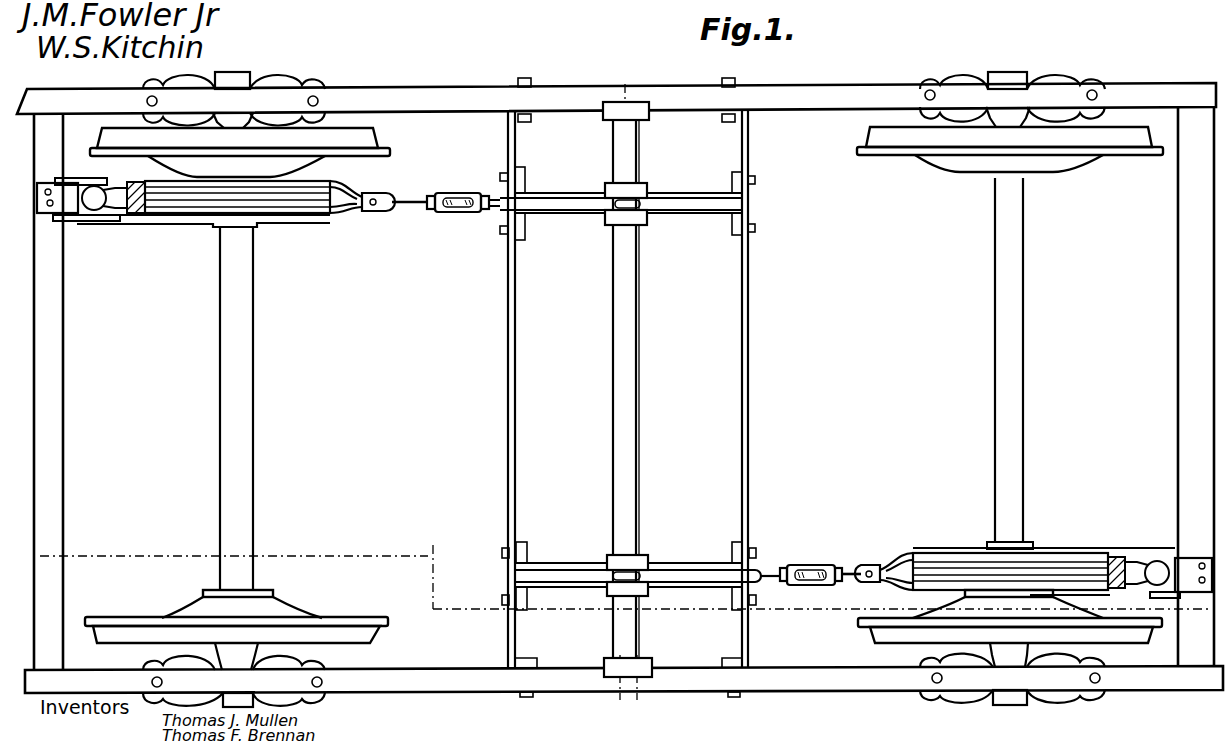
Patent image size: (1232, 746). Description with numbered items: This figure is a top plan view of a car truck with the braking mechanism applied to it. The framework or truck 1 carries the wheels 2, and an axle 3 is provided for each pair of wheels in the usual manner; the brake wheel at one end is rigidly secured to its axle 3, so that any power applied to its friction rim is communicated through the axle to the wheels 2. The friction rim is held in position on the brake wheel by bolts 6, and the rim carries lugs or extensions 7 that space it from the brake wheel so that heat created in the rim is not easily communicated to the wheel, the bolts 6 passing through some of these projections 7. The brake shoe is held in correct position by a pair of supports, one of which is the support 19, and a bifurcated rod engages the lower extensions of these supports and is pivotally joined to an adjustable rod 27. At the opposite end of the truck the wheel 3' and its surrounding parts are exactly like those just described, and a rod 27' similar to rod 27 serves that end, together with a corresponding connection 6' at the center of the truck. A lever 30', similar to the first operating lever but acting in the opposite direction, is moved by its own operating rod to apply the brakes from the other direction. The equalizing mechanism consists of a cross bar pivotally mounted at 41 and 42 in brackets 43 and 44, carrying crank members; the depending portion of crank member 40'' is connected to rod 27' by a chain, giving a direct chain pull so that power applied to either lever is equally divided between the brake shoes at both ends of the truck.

The framework or truck 1 is at (489, 687).
The wheels 2 is at (378, 132).
The axle 3 is at (621, 384).
The wheel at opposite end 3' is at (1065, 580).
The bolts 6 is at (628, 387).
The clevis on transom 6' is at (647, 407).
The lugs or extensions 7 is at (643, 120).
The support 19 is at (72, 176).
The rod 27 is at (848, 592).
The rod 27' is at (420, 230).
The lever 30' is at (606, 192).
The crank member 40'' is at (615, 225).
The pivot 41 is at (613, 693).
The pivot 42 is at (634, 69).
The bracket 43 is at (651, 664).
The bracket 44 is at (651, 104).